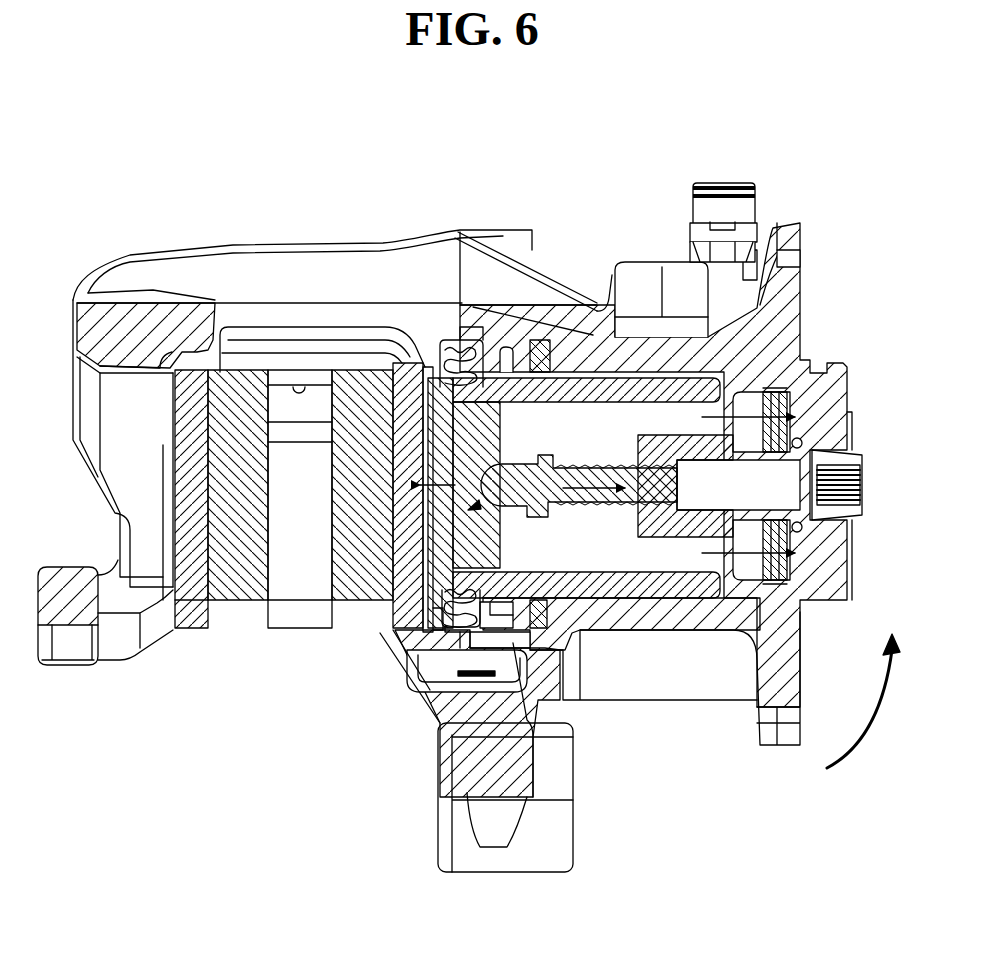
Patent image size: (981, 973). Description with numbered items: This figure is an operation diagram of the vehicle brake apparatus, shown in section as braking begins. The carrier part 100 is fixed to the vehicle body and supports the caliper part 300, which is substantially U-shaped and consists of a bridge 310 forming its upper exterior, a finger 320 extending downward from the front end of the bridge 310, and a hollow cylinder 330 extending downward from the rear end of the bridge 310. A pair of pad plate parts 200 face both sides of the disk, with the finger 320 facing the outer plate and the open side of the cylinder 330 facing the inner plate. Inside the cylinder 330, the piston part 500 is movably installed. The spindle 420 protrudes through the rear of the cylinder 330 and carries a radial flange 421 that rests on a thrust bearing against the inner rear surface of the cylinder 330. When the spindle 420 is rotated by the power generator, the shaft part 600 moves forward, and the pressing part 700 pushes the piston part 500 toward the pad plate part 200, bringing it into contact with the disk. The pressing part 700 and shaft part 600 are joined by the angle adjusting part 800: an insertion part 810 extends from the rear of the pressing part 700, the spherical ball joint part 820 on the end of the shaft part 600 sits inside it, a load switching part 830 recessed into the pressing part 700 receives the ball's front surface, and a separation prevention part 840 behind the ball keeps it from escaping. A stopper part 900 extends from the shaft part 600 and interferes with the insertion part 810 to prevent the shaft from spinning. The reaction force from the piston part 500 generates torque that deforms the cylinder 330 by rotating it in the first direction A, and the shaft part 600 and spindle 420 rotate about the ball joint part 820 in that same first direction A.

The carrier part 100 is at (500, 780).
The pad plate part 200 is at (243, 578).
The caliper part 300 is at (547, 168).
The bridge 310 is at (305, 268).
The finger 320 is at (147, 400).
The cylinder 330 is at (760, 363).
The spindle 420 is at (805, 468).
The flange 421 is at (797, 418).
The piston part 500 is at (686, 590).
The shaft part 600 is at (617, 507).
The pressing part 700 is at (420, 557).
The angle adjusting part 800 is at (333, 730).
The insertion part 810 is at (510, 625).
The ball joint part 820 is at (463, 600).
The load switching part 830 is at (437, 610).
The separation prevention part 840 is at (470, 650).
The stopper part 900 is at (788, 393).
The first direction A is at (860, 752).